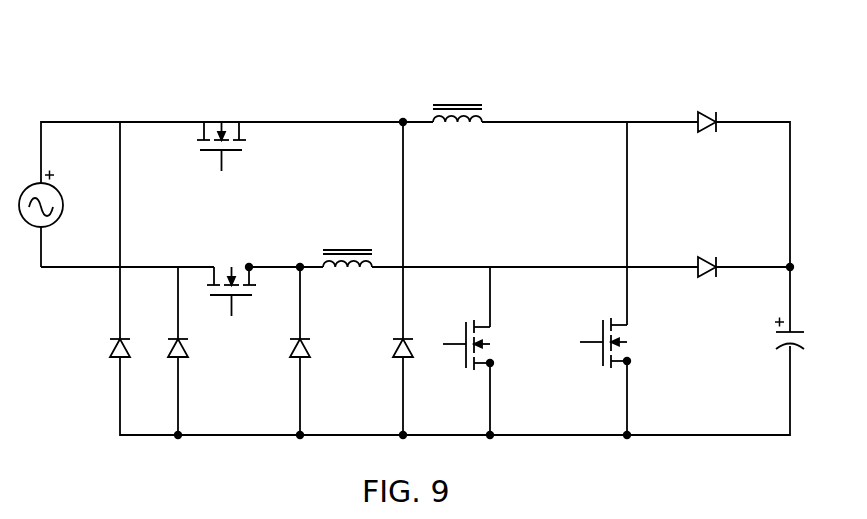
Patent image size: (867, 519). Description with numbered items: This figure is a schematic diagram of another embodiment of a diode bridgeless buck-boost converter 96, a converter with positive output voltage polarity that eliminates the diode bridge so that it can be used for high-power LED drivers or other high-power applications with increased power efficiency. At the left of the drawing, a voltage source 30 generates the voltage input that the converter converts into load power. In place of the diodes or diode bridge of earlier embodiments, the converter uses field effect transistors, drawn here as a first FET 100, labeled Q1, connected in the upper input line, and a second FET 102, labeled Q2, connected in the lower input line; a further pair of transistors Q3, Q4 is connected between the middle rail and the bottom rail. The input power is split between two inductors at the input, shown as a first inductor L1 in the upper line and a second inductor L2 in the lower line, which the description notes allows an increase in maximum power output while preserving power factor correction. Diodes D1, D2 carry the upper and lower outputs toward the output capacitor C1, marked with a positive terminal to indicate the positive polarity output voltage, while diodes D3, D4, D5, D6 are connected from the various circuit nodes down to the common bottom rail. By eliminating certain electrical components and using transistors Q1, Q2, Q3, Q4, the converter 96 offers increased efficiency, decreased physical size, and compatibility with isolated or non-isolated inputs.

The diode bridgeless buck-boost converter 96 is at (750, 64).
The voltage source 30 is at (63, 198).
The field effect transistor 100 is at (262, 149).
The field effect transistor 102 is at (244, 311).
The transistor Q1 is at (216, 149).
The transistor Q2 is at (226, 294).
The transistor Q3 is at (460, 344).
The transistor Q4 is at (597, 342).
The diode D1 is at (714, 110).
The diode D2 is at (714, 256).
The diode D3 is at (386, 342).
The diode D4 is at (288, 342).
The diode D5 is at (162, 342).
The diode D6 is at (103, 342).
The inductor L1 is at (457, 101).
The inductor L2 is at (347, 247).
The output capacitor C1 is at (773, 334).